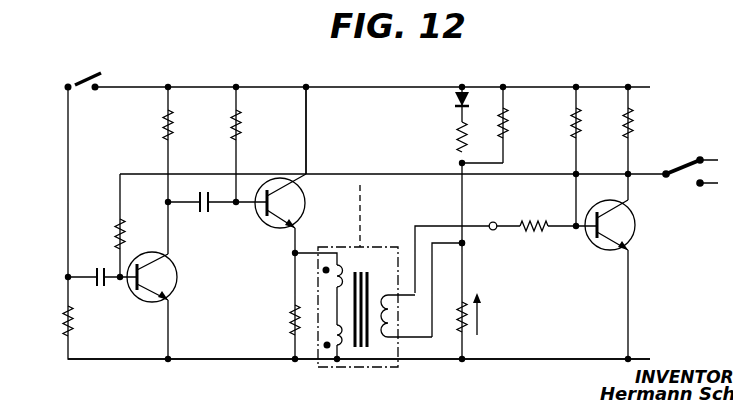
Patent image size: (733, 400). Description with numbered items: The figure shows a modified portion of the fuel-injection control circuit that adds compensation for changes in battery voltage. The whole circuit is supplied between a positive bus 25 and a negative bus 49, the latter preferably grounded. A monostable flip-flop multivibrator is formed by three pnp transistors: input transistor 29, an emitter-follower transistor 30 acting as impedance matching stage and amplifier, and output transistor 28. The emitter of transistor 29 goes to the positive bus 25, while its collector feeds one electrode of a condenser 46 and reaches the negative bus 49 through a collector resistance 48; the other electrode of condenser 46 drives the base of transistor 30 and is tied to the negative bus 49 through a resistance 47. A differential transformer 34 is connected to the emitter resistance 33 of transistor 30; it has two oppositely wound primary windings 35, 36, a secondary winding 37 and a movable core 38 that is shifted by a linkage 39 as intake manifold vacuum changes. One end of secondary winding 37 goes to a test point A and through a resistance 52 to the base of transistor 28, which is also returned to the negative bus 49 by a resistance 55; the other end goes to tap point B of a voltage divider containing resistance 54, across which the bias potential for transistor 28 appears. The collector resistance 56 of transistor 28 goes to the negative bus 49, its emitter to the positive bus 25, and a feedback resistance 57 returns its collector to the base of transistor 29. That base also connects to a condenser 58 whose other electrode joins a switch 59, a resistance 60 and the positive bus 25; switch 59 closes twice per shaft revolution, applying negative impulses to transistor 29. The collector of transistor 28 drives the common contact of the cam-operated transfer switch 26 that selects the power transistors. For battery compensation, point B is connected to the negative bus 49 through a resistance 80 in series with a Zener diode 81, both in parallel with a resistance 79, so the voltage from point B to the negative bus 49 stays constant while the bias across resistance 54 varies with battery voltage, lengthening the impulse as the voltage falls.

The switch 59 is at (83, 78).
The collector resistance 48 is at (164, 124).
The resistance 47 is at (232, 124).
The negative bus 49 is at (310, 89).
The Zener diode 81 is at (455, 99).
The resistance 80 is at (456, 135).
The resistance 79 is at (507, 126).
The resistance 55 is at (572, 124).
The collector resistance 56 is at (624, 118).
The transfer switch 26 is at (695, 174).
The feedback resistance 57 is at (116, 232).
The condenser 46 is at (206, 210).
The transistor 30 is at (297, 188).
The linkage 39 is at (363, 192).
The transistor 29 is at (170, 284).
The condenser 58 is at (102, 287).
The resistance 60 is at (63, 320).
The positive bus 25 is at (205, 359).
The differential transformer 34 is at (345, 245).
The movable core 38 is at (360, 268).
The primary winding 35 is at (333, 279).
The emitter resistance 33 is at (290, 315).
The primary winding 36 is at (328, 336).
The secondary winding 37 is at (392, 310).
The resistance 54 is at (458, 328).
The test point A is at (494, 222).
The tap point B is at (465, 243).
The resistance 52 is at (532, 224).
The transistor 28 is at (627, 244).